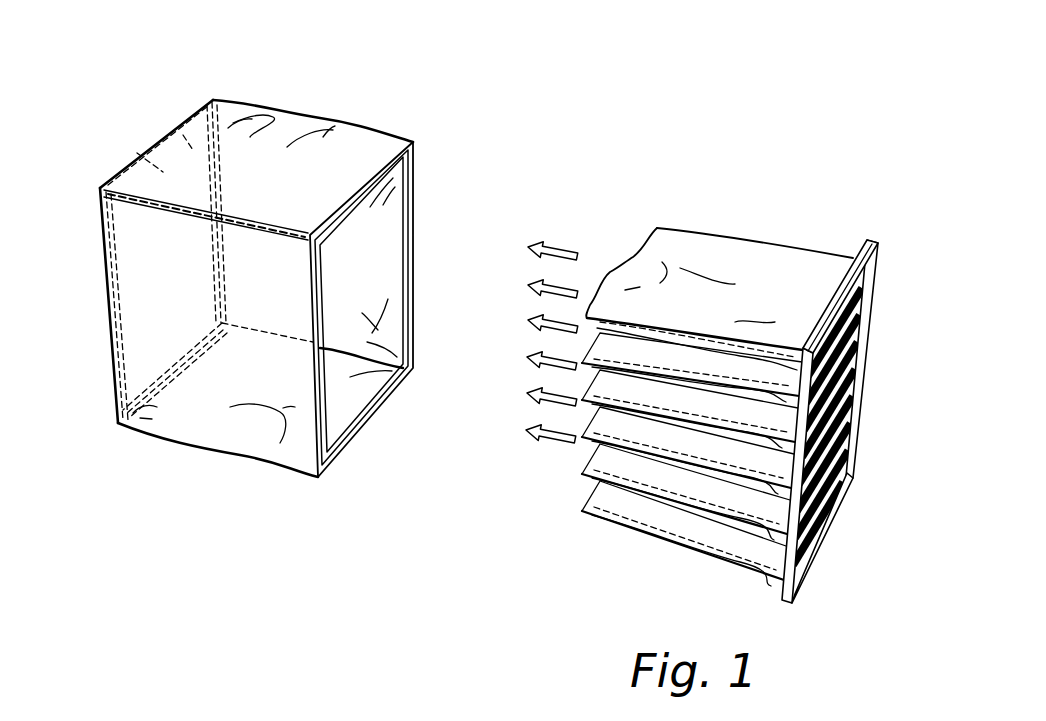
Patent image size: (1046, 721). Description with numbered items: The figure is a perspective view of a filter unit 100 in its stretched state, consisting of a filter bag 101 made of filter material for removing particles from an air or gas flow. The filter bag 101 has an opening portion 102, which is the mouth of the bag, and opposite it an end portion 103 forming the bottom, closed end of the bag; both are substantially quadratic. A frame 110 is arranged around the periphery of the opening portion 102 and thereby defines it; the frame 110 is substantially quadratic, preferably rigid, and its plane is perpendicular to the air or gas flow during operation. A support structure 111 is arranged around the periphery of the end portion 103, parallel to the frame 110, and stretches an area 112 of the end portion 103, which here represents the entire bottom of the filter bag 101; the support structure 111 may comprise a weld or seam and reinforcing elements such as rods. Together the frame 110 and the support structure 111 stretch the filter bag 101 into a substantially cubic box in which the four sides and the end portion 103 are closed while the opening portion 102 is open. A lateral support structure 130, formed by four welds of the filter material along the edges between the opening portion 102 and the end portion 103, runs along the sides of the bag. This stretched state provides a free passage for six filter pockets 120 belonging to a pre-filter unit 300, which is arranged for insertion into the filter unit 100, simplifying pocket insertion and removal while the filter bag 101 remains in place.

The filter unit 100 is at (396, 71).
The filter bag 101 is at (208, 425).
The opening portion 102 is at (387, 315).
The end portion 103 is at (180, 123).
The frame 110 is at (365, 423).
The support structure 111 is at (118, 170).
The area 112 is at (137, 150).
The filter pockets 120 is at (722, 253).
The lateral support structure 130 is at (200, 210).
The pre-filter unit 300 is at (839, 578).